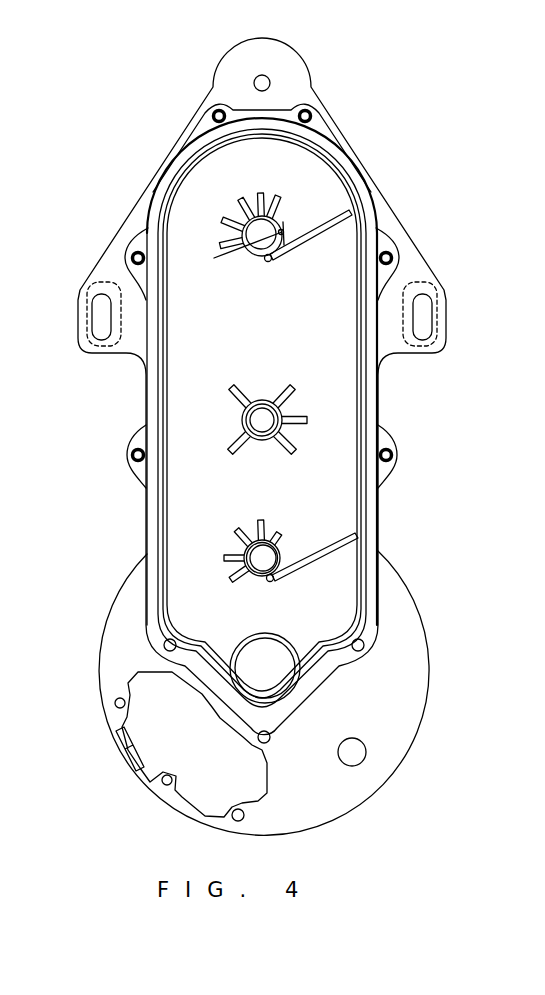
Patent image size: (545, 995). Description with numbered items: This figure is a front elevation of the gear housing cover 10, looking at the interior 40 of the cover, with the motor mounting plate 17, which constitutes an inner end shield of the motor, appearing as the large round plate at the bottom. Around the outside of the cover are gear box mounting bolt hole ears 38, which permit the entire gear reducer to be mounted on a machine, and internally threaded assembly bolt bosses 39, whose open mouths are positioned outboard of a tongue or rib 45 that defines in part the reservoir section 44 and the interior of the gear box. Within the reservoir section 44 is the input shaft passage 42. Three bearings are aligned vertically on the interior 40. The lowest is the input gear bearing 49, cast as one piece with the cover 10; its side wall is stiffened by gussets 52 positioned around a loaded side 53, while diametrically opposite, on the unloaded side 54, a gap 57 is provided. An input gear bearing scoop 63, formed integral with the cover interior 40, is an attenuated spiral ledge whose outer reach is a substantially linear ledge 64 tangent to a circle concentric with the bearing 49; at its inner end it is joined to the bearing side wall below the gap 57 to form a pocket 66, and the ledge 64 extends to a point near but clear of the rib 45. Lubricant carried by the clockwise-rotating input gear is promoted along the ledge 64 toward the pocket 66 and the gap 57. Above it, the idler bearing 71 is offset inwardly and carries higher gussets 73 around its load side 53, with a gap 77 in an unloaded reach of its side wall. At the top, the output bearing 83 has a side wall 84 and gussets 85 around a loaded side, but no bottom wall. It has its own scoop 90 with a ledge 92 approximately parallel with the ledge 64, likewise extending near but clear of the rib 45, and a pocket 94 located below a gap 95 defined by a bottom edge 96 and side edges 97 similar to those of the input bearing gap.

The gear housing cover 10 is at (390, 497).
The motor mounting plate 17 is at (398, 724).
The gear box mounting bolt hole ears 38 is at (268, 77).
The assembly bolt bosses 39 is at (214, 108).
The interior of the cover 40 is at (352, 416).
The input shaft passage 42 is at (278, 642).
The reservoir section 44 is at (204, 613).
The tongue or rib 45 is at (167, 384).
The input gear bearing 49 is at (280, 540).
The gussets 52 is at (240, 528).
The loaded side 53 is at (292, 408).
The unloaded side 54 is at (287, 563).
The gap 57 is at (288, 548).
The input gear bearing scoop 63 is at (348, 553).
The linear ledge 64 is at (345, 545).
The pocket 66 is at (272, 585).
The idler bearing 71 is at (259, 390).
The gussets 73 is at (290, 392).
The gap 77 is at (277, 443).
The output bearing 83 is at (242, 263).
The side wall 84 is at (246, 205).
The gussets 85 is at (236, 210).
The scoop 90 is at (341, 236).
The ledge 92 is at (344, 215).
The pocket 94 is at (278, 265).
The gap 95 is at (287, 226).
The bottom edge 96 is at (235, 251).
The side edges 97 is at (286, 222).